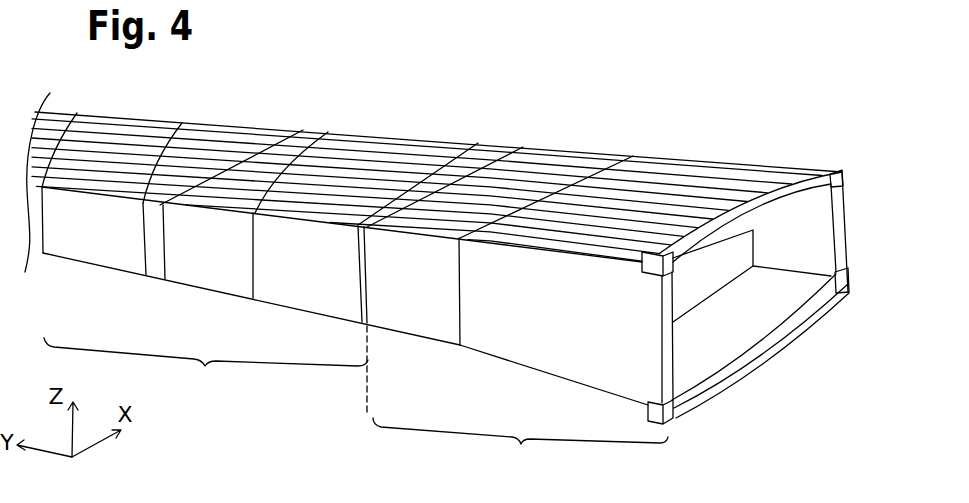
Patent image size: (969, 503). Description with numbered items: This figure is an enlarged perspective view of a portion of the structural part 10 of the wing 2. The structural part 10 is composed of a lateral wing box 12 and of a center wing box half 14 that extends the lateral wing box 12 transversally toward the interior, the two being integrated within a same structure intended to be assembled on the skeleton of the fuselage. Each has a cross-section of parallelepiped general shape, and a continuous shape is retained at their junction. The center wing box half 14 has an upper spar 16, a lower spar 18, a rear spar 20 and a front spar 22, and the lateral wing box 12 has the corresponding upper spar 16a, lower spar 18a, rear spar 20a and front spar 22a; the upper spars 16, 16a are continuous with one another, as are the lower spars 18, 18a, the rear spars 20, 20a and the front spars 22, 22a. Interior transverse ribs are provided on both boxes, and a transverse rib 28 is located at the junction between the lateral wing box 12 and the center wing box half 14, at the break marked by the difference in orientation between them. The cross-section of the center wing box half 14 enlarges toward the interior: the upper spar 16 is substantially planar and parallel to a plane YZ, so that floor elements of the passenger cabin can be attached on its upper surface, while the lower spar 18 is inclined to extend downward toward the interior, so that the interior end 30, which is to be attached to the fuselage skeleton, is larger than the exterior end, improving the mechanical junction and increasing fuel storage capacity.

The wing 2 is at (415, 115).
The structural part 10 is at (213, 118).
The lateral wing box 12 is at (206, 368).
The center wing box half 14 is at (520, 447).
The upper spar 16 is at (668, 210).
The upper spar 16a is at (419, 157).
The lower spar 18 is at (707, 352).
The lower spar 18a is at (218, 293).
The rear spar 20 is at (606, 348).
The rear spar 20a is at (207, 263).
The front spar 22 is at (795, 243).
The front spar 22a is at (390, 132).
The transverse rib 28 is at (565, 173).
The interior end 30 is at (817, 333).